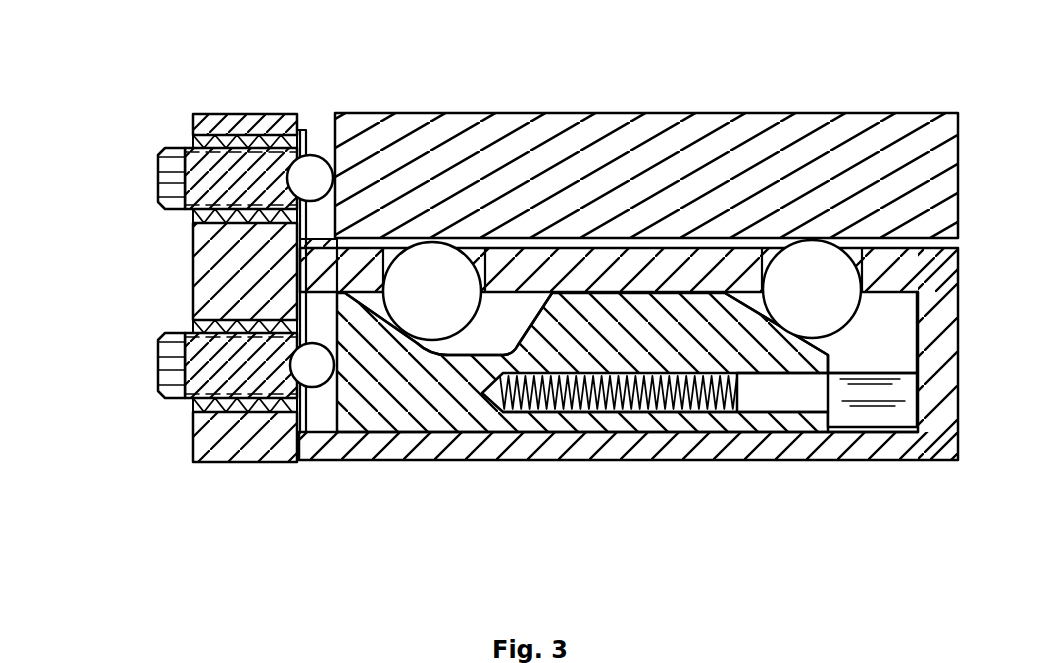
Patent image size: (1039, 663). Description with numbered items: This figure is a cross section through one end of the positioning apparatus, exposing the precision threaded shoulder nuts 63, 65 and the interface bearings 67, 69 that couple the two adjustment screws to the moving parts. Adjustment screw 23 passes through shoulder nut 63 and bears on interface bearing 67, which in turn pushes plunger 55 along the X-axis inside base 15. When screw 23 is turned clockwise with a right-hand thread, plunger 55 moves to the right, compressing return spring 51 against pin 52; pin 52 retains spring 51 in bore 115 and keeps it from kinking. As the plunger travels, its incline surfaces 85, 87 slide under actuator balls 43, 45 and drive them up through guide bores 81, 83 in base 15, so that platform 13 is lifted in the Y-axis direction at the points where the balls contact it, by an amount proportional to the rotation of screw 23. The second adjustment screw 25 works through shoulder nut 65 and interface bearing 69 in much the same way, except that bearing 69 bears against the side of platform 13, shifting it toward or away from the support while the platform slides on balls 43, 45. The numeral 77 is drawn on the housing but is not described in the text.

The platform 13 is at (607, 112).
The base 15 is at (960, 343).
The adjustment screw 23 is at (158, 367).
The adjustment screw 25 is at (155, 182).
The actuator ball 43 is at (465, 312).
The actuator ball 45 is at (847, 312).
The return spring 51 is at (677, 400).
The pin 52 is at (907, 380).
The plunger 55 is at (433, 410).
The precision threaded shoulder nut 63 is at (193, 407).
The precision threaded shoulder nut 65 is at (192, 140).
The interface bearing 67 is at (312, 390).
The interface bearing 69 is at (312, 154).
The bottom wall 77 is at (890, 430).
The guide bore 81 is at (390, 258).
The guide bore 83 is at (770, 254).
The plunger incline surface 85 is at (423, 342).
The plunger incline surface 87 is at (768, 406).
The bore 115 is at (640, 413).